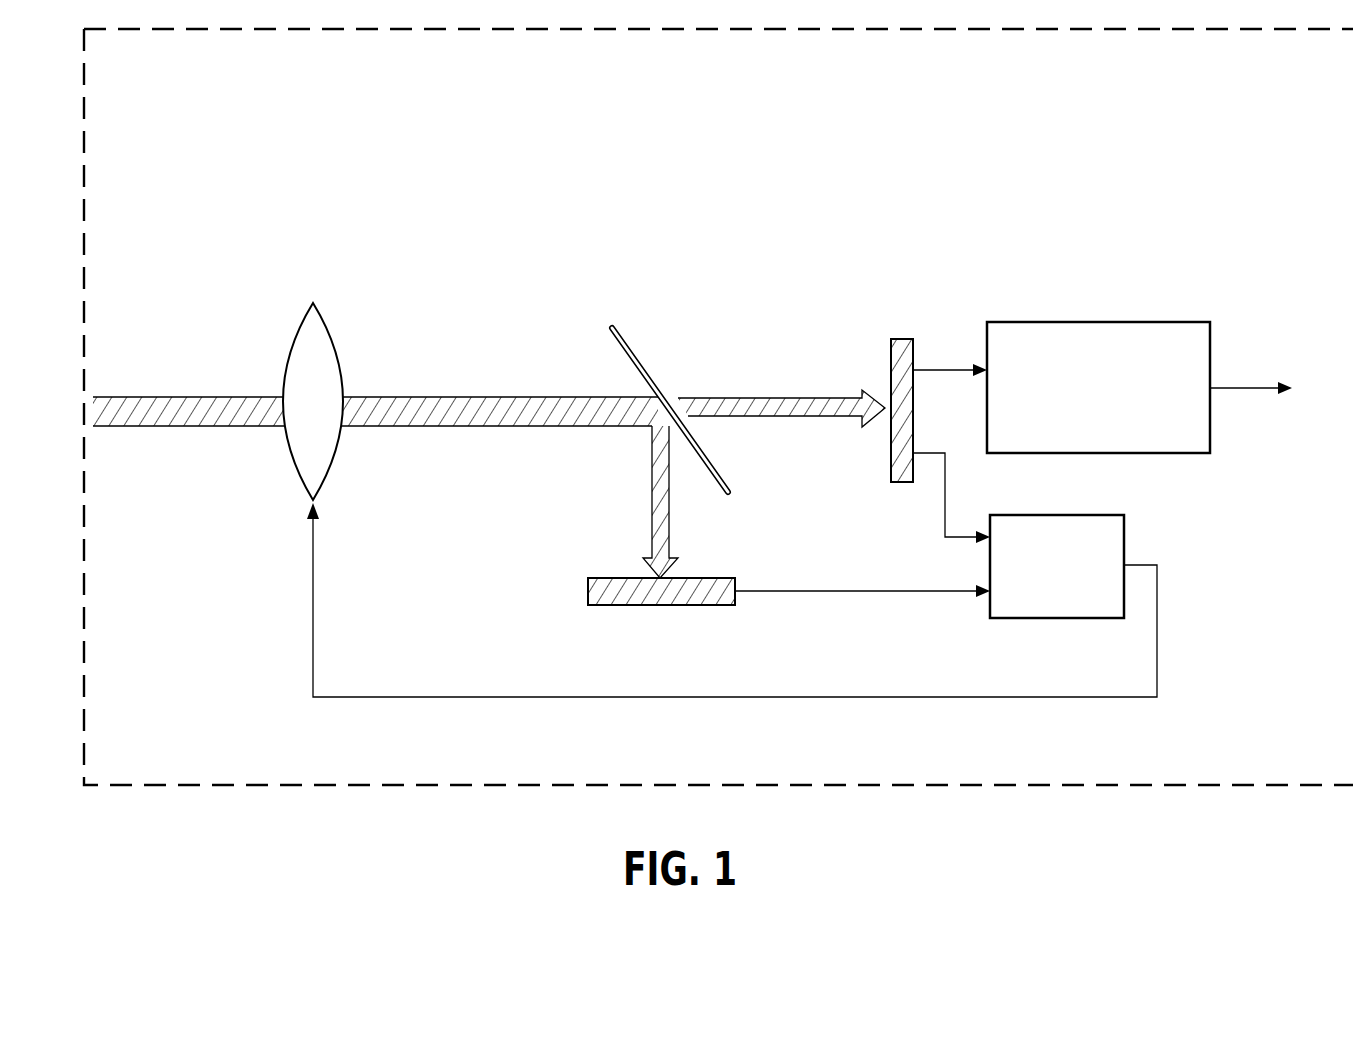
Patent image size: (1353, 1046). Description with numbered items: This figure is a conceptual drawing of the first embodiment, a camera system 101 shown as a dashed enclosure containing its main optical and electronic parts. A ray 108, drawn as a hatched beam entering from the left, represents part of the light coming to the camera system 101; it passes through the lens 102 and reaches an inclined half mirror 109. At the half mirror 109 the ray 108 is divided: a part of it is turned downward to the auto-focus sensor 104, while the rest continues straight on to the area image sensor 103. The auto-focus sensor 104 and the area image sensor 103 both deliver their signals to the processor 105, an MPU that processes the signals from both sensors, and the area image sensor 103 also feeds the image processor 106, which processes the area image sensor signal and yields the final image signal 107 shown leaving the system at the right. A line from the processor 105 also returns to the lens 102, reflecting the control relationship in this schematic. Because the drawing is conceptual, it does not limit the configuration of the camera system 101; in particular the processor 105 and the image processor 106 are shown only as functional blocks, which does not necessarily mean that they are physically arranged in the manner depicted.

The camera system 101 is at (1130, 786).
The lens 102 is at (325, 318).
The area image sensor 103 is at (912, 339).
The auto-focus sensor 104 is at (700, 578).
The processor (MPU) 105 is at (1050, 515).
The image processor 106 is at (1115, 322).
The final image signal 107 is at (1281, 390).
The ray 108 is at (183, 397).
The half mirror 109 is at (628, 346).